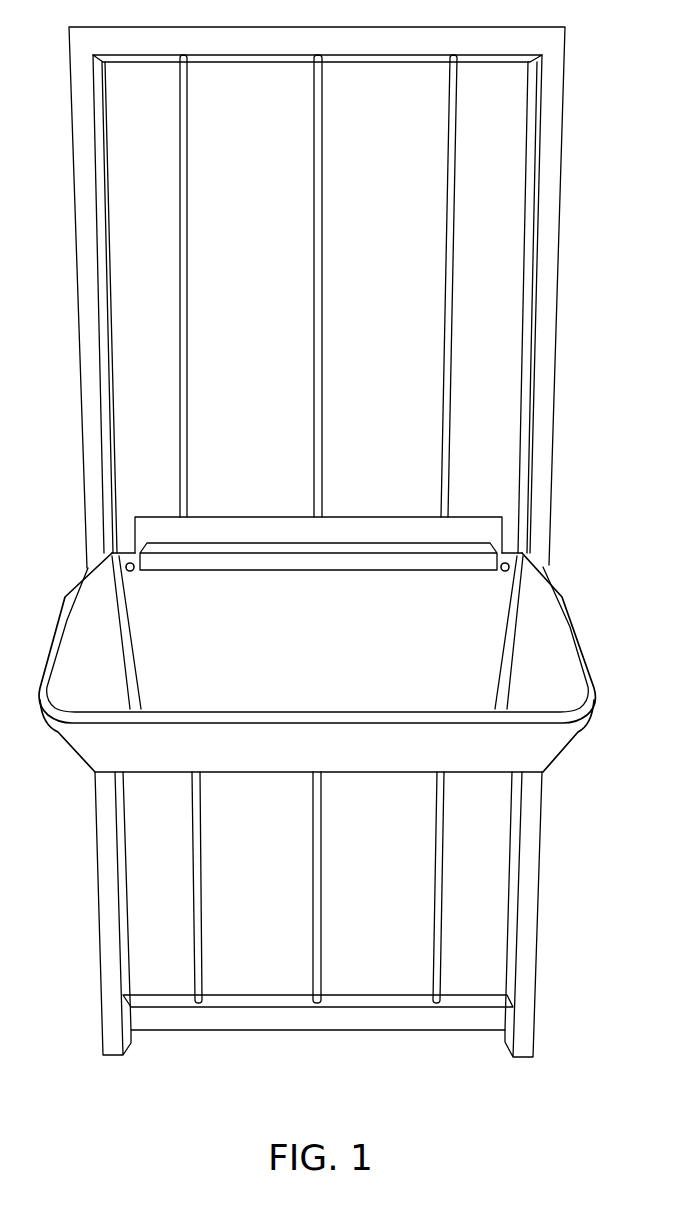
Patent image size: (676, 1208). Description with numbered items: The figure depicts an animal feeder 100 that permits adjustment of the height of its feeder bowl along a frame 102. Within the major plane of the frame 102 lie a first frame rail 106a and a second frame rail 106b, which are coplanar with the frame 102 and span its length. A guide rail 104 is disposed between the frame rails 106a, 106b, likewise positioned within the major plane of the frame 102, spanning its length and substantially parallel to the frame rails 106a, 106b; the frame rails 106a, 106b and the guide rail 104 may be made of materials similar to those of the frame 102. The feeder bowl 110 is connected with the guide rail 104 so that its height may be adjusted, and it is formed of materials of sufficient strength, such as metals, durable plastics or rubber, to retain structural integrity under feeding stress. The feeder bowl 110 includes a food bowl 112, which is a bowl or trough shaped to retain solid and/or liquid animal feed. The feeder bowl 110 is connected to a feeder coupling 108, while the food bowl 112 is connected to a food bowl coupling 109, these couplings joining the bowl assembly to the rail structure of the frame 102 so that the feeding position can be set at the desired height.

The animal feeder 100 is at (557, 93).
The frame 102 is at (552, 333).
The guide rail 104 is at (323, 212).
The first frame rail 106a is at (192, 262).
The second frame rail 106b is at (447, 166).
The feeder coupling 108 is at (358, 520).
The food bowl coupling 109 is at (331, 572).
The feeder bowl 110 is at (562, 660).
The food bowl 112 is at (72, 656).